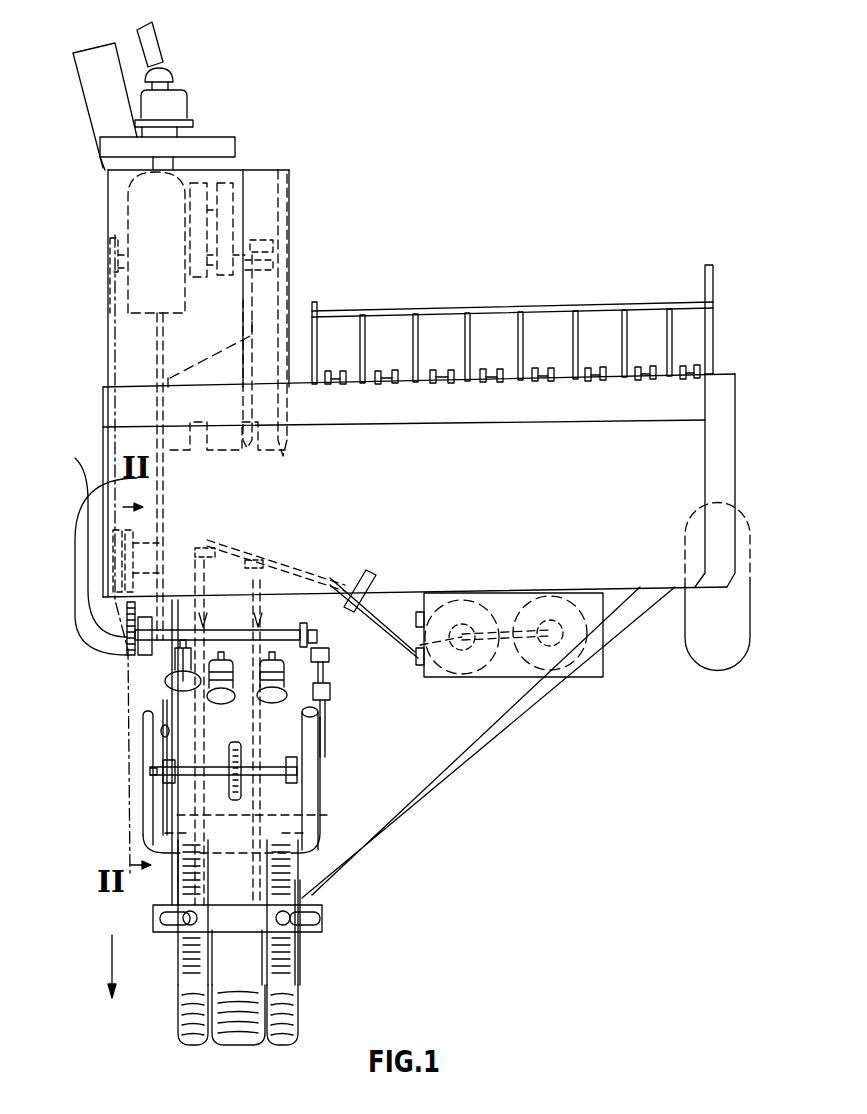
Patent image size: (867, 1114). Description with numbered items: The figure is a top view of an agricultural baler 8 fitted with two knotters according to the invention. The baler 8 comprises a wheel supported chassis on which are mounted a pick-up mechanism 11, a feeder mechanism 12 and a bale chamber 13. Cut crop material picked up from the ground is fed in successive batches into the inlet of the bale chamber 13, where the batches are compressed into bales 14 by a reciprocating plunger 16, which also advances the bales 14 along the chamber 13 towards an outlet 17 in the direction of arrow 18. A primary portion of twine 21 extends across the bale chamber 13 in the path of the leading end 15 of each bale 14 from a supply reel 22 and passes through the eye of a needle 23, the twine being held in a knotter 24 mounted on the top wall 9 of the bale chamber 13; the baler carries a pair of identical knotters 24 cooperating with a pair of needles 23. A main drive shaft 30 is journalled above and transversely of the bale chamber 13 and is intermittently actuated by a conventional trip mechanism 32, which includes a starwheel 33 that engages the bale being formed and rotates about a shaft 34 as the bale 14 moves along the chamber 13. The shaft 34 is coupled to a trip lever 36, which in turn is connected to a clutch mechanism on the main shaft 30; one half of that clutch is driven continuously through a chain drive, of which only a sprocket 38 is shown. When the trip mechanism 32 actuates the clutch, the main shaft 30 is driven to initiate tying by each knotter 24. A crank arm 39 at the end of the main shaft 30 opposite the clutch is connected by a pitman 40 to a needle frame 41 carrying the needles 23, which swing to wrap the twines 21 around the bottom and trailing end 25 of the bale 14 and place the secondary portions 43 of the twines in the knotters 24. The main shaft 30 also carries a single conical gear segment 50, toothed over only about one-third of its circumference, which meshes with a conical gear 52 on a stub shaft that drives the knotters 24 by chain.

The agricultural baler 8 is at (518, 270).
The top wall 9 is at (248, 887).
The pick-up mechanism 11 is at (690, 376).
The feeder mechanism 12 is at (710, 465).
The bale chamber 13 is at (330, 692).
The bale 14 is at (303, 1017).
The leading end 15 is at (250, 1040).
The reciprocating plunger 16 is at (185, 367).
The outlet 17 is at (300, 988).
The arrow 18 is at (112, 955).
The twine 21 is at (388, 600).
The supply reel 22 is at (548, 676).
The needle 23 is at (202, 615).
The knotter 24 is at (296, 698).
The trailing end 25 is at (282, 812).
The main drive shaft 30 is at (278, 605).
The trip mechanism 32 is at (153, 803).
The starwheel 33 is at (303, 787).
The shaft 34 is at (303, 760).
The trip lever 36 is at (207, 697).
The sprocket 38 is at (108, 547).
The crank arm 39 is at (325, 645).
The pitman 40 is at (329, 664).
The needle frame 41 is at (317, 840).
The secondary portion 43 is at (258, 575).
The conical gear segment 50 is at (140, 668).
The conical gear 52 is at (173, 650).